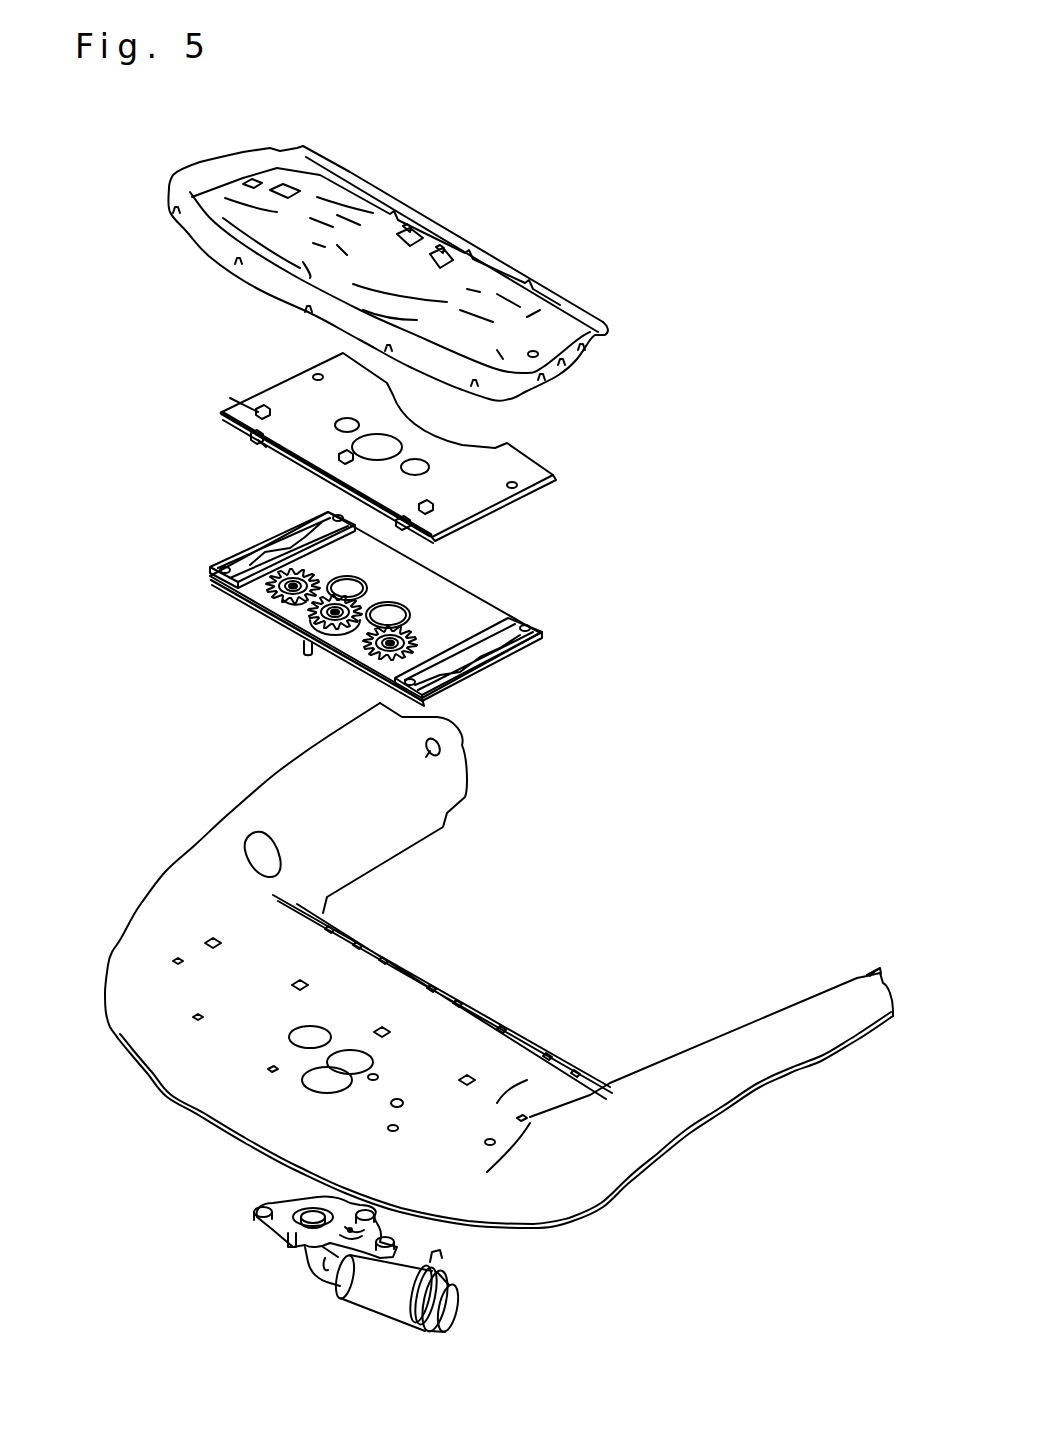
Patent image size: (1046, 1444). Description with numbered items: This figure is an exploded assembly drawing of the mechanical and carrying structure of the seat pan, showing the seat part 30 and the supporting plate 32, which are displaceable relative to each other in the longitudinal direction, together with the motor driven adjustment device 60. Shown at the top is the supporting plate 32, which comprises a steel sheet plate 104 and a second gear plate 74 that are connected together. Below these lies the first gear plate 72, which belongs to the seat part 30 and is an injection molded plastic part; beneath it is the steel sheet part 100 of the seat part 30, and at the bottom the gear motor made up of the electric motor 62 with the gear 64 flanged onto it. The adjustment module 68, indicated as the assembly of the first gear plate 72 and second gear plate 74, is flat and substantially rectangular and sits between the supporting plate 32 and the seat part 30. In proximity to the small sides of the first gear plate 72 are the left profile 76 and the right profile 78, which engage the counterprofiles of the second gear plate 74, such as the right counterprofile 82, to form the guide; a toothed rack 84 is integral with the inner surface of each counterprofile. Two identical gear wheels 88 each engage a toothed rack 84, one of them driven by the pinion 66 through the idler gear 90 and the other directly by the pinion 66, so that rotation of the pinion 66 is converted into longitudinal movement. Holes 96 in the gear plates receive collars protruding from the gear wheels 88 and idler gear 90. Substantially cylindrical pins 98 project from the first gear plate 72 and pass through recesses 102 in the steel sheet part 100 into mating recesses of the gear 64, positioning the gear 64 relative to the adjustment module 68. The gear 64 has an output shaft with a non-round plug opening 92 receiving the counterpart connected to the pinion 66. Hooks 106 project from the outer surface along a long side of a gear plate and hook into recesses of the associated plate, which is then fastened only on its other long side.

The seat part 30 is at (657, 621).
The supporting plate 32 is at (727, 233).
The motor driven adjustment device 60 is at (182, 688).
The electric motor 62 is at (370, 1293).
The gear 64 is at (322, 1266).
The pinion 66 is at (358, 630).
The adjustment module 68 is at (724, 599).
The first gear plate 72 is at (542, 638).
The second gear plate 74 is at (543, 465).
The left profile 76 is at (512, 620).
The right profile 78 is at (290, 620).
The right counterprofile 82 is at (255, 440).
The toothed rack 84 is at (268, 443).
The gear wheel 88 is at (412, 637).
The idler gear 90 is at (300, 608).
The non-round plug opening 92 is at (307, 1197).
The holes 96 is at (340, 420).
The cylindrical pins 98 is at (300, 644).
The steel sheet part 100 is at (443, 785).
The recesses 102 is at (272, 1073).
The steel sheet plate 104 is at (575, 305).
The hooks 106 is at (250, 397).